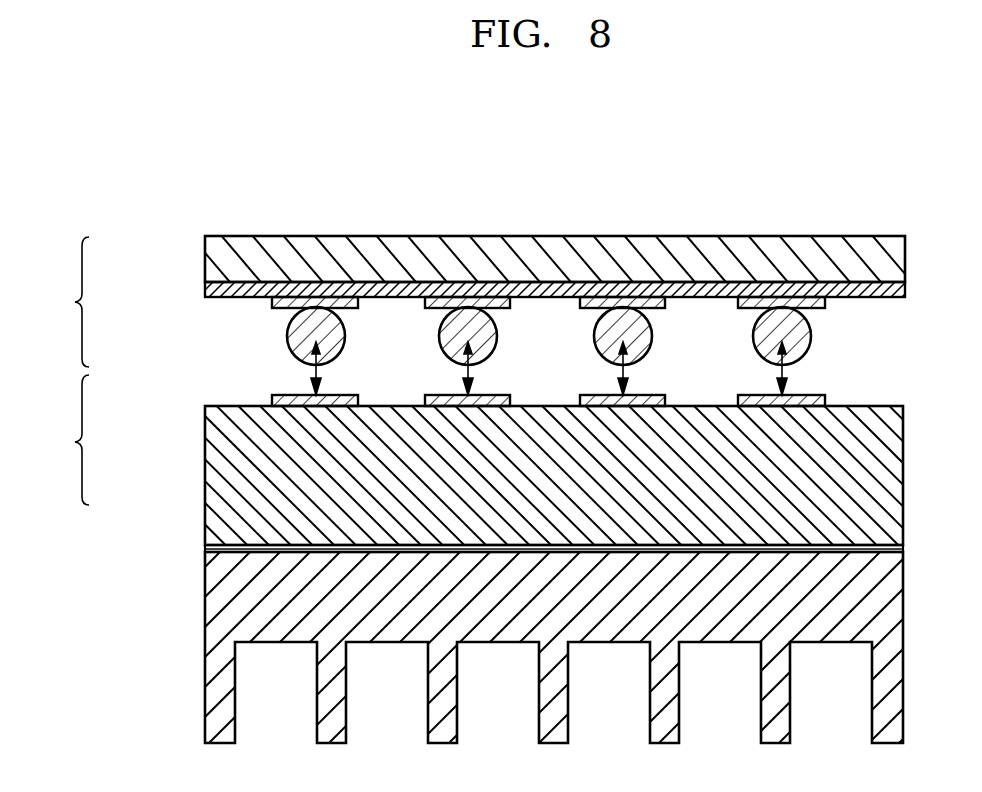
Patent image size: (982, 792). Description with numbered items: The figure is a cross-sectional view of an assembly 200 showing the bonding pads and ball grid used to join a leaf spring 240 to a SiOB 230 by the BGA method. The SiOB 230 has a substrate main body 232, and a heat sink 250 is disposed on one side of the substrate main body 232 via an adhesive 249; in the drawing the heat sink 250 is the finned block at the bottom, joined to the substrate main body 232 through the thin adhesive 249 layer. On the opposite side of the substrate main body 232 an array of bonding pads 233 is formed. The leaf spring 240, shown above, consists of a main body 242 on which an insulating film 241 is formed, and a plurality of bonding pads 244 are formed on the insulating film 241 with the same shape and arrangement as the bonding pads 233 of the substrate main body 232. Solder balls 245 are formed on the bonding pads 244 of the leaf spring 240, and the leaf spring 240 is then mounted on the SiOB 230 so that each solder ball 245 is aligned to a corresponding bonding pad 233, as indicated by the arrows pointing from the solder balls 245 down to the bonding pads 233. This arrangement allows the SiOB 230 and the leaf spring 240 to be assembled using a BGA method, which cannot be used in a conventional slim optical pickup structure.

The semiconductor package 200 is at (198, 206).
The leaf spring 240 is at (49, 302).
The main body 242 is at (232, 254).
The insulating film 241 is at (220, 292).
The bonding pads 244 is at (272, 305).
The solder balls 245 is at (298, 338).
The bonding pads 233 is at (272, 398).
The SiOB 230 is at (49, 440).
The substrate main body 232 is at (242, 478).
The adhesive 249 is at (218, 546).
The heat sink 250 is at (238, 590).